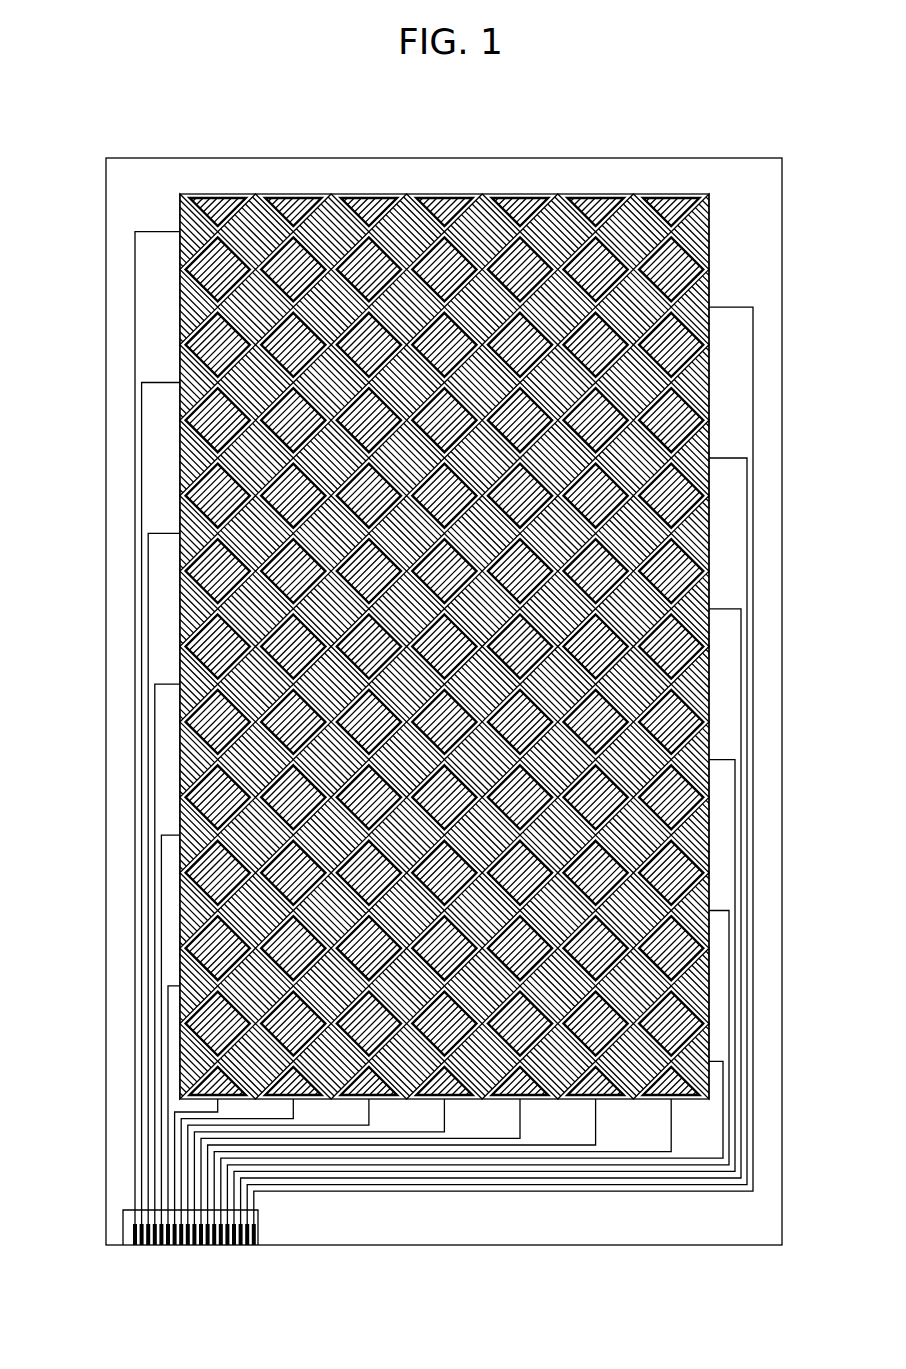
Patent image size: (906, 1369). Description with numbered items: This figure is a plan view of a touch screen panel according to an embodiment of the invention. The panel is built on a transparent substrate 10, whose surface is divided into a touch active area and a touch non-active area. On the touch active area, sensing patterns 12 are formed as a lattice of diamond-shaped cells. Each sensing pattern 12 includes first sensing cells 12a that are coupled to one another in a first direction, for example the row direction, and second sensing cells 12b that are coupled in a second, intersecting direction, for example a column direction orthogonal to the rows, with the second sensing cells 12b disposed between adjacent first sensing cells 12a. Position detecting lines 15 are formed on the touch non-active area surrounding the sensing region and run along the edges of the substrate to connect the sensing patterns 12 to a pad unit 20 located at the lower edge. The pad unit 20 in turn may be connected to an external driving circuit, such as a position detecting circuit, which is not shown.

The transparent substrate 10 is at (580, 160).
The sensing patterns 12 is at (444, 579).
The first sensing cells 12a is at (258, 218).
The second sensing cells 12b is at (215, 256).
The position detecting lines 15 is at (135, 280).
The pad unit 20 is at (258, 1228).